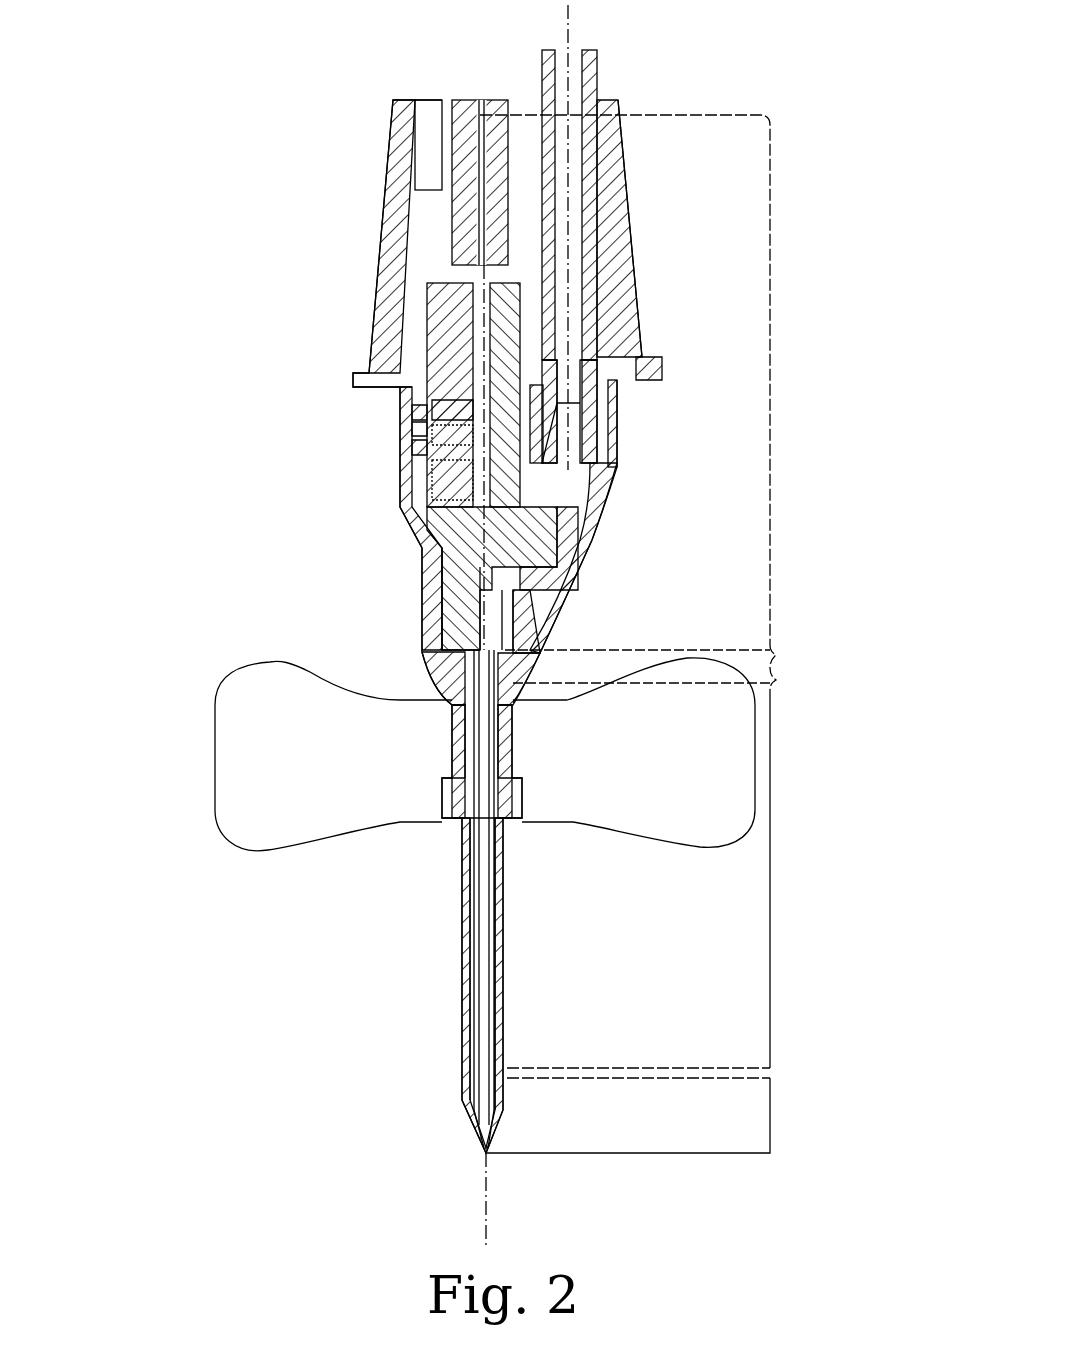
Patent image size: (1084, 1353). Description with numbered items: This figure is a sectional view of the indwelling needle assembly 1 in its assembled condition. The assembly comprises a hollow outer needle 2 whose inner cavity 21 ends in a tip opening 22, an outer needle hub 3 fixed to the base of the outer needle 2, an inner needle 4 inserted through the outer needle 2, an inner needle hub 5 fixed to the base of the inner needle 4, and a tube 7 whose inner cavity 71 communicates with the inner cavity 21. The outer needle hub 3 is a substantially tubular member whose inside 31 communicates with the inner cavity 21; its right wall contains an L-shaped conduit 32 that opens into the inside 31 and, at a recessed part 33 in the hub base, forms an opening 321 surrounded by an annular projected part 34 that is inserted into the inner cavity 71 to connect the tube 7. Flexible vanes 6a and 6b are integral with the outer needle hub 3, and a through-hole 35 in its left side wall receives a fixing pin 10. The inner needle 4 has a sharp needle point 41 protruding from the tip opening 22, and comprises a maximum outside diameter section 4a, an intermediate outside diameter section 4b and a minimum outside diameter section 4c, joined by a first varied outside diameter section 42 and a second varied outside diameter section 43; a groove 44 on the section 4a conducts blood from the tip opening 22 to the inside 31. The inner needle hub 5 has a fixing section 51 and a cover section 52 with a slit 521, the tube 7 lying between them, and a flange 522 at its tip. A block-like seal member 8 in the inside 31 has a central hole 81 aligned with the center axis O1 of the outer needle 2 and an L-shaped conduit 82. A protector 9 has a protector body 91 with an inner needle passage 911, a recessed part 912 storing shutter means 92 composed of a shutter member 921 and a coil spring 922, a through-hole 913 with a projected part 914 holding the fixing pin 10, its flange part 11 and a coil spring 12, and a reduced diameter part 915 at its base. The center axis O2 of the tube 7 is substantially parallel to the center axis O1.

The indwelling needle assembly 1 is at (222, 382).
The outer needle 2 is at (462, 925).
The inner cavity 21 is at (462, 1043).
The tip opening 22 is at (472, 1128).
The outer needle hub 3 is at (420, 548).
The inside 31 is at (463, 670).
The conduit 32 is at (570, 567).
The opening 321 is at (600, 483).
The recessed part 33 is at (617, 438).
The projected part 34 is at (608, 405).
The through-hole 35 is at (367, 383).
The inner needle 4 is at (490, 898).
The needle point 41 is at (470, 1128).
The first varied outside diameter section 42 is at (772, 1073).
The second varied outside diameter section 43 is at (772, 665).
The groove 44 is at (498, 1128).
The maximum outside diameter section 4a is at (770, 1115).
The intermediate outside diameter section 4b is at (770, 877).
The minimum outside diameter section 4c is at (770, 383).
The inner needle hub 5 is at (375, 287).
The fixing section 51 is at (458, 200).
The cover section 52 is at (403, 132).
The slit 521 is at (617, 197).
The flange 522 is at (658, 367).
The vane 6a is at (662, 815).
The vane 6b is at (273, 823).
The tube 7 is at (500, 325).
The inner cavity 71 is at (590, 135).
The seal member 8 is at (458, 600).
The hole 81 is at (428, 583).
The conduit 82 is at (515, 623).
The protector 9 is at (410, 448).
The protector body 91 is at (420, 320).
The inner needle passage 911 is at (512, 340).
The recessed part 912 is at (553, 567).
The through-hole 913 is at (530, 320).
The projected part 914 is at (551, 287).
The reduced diameter part 915 is at (428, 283).
The shutter means 92 is at (262, 468).
The shutter member 921 is at (413, 500).
The coil spring 922 is at (397, 467).
The fixing pin 10 is at (400, 425).
The flange part 11 is at (540, 385).
The coil spring 12 is at (400, 413).
The center axis O1 is at (486, 1207).
The center axis O2 is at (572, 30).